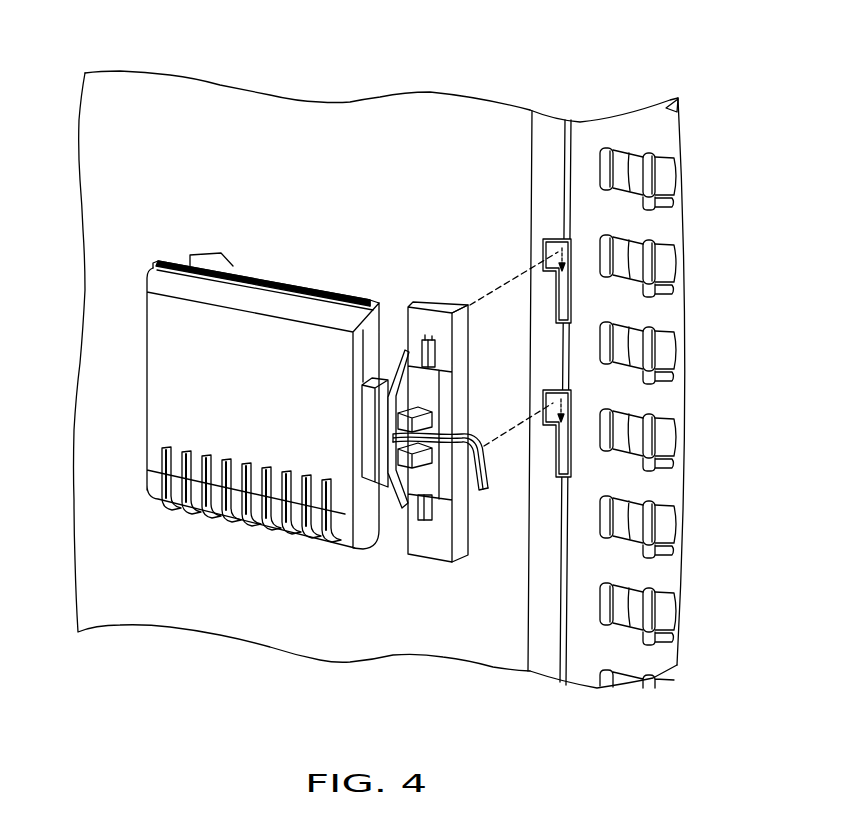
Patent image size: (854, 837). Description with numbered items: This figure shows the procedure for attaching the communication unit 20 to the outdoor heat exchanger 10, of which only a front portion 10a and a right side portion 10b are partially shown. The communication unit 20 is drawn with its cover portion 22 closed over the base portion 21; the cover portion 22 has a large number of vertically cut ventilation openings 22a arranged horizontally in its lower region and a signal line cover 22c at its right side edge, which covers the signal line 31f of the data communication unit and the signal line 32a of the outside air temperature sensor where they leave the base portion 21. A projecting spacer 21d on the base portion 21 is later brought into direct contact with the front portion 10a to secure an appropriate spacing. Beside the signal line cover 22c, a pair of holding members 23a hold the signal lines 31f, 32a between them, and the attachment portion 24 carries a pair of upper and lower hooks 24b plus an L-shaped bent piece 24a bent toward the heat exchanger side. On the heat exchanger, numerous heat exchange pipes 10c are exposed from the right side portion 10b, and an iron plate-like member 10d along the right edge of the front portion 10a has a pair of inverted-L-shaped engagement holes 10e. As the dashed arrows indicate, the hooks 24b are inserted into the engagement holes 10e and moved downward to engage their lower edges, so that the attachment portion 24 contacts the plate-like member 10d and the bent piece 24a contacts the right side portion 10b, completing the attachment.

The outdoor heat exchanger 10 is at (467, 73).
The front portion 10a is at (298, 113).
The right side portion 10b is at (625, 130).
The heat exchange pipes 10c is at (636, 246).
The plate-like member 10d is at (547, 128).
The engagement holes 10e is at (552, 240).
The communication unit 20 is at (118, 282).
The base portion 21 is at (290, 286).
The spacer 21d is at (207, 262).
The cover portion 22 is at (162, 386).
The ventilation openings 22a is at (250, 520).
The signal line cover 22c is at (372, 414).
The holding members 23a is at (412, 414).
The attachment portion 24 is at (470, 432).
The bent piece 24a is at (460, 385).
The hooks 24b is at (438, 352).
The signal line 31f is at (457, 433).
The signal line 32a is at (456, 464).